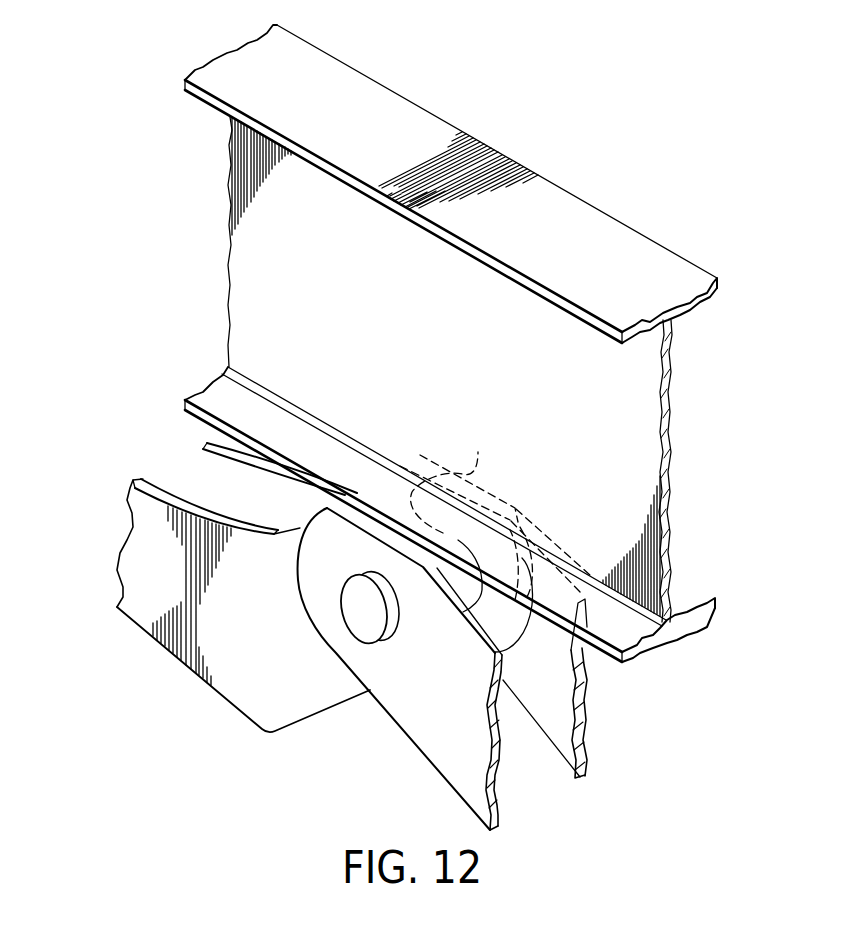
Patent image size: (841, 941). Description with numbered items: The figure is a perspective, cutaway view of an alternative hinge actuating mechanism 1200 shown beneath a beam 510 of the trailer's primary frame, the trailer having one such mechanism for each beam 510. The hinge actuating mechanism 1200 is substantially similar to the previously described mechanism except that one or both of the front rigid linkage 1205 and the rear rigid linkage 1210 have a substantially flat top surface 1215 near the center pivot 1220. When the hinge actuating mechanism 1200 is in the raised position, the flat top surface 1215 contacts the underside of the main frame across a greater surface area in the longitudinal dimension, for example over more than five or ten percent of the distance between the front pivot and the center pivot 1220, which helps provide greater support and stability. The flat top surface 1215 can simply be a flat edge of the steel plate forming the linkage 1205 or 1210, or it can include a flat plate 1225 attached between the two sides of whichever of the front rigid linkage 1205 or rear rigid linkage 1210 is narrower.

The beam 510 is at (418, 120).
The hinge actuating mechanism 1200 is at (321, 608).
The front rigid linkage 1205 is at (143, 618).
The rear rigid linkage 1210 is at (401, 669).
The flat top surface 1215 is at (477, 474).
The center pivot 1220 is at (360, 608).
The flat plate 1225 is at (387, 493).